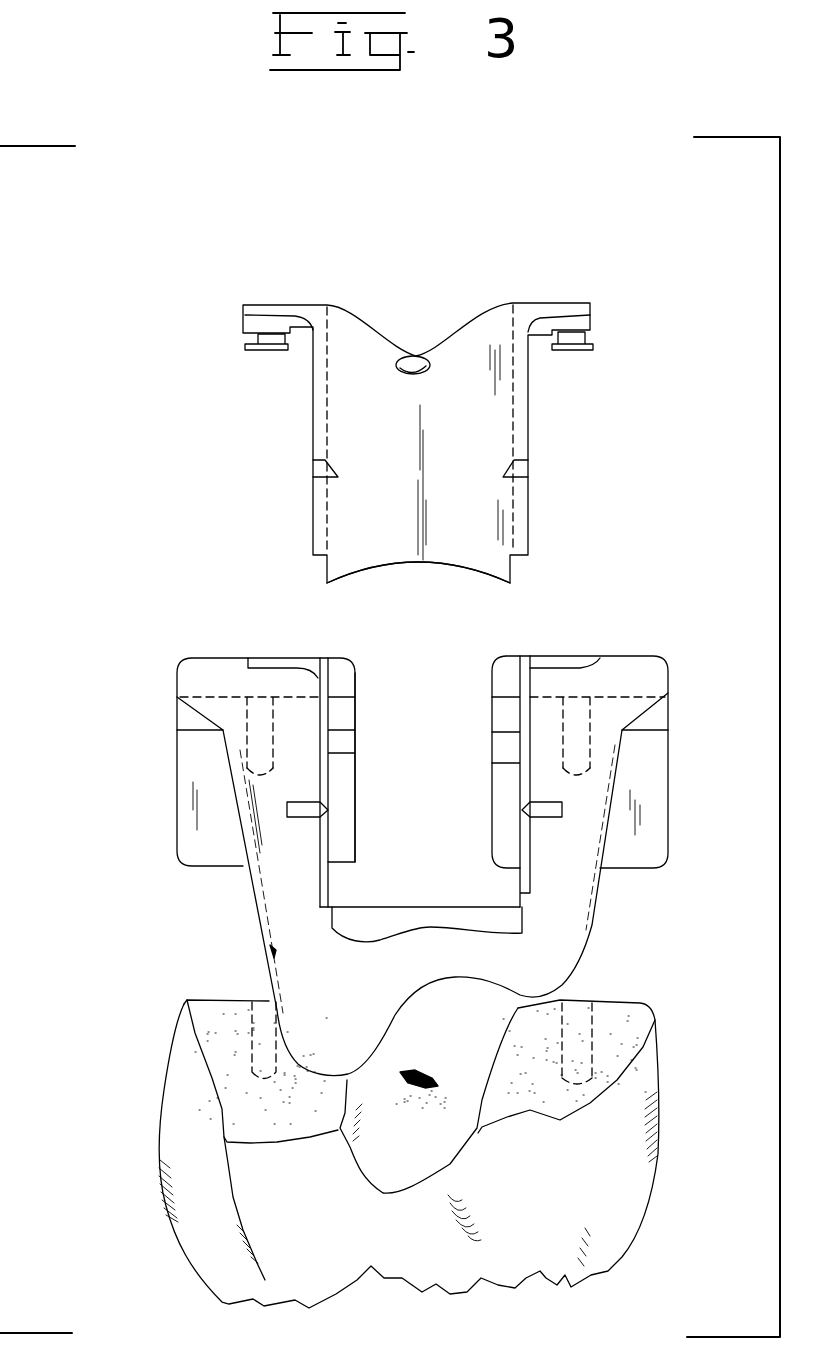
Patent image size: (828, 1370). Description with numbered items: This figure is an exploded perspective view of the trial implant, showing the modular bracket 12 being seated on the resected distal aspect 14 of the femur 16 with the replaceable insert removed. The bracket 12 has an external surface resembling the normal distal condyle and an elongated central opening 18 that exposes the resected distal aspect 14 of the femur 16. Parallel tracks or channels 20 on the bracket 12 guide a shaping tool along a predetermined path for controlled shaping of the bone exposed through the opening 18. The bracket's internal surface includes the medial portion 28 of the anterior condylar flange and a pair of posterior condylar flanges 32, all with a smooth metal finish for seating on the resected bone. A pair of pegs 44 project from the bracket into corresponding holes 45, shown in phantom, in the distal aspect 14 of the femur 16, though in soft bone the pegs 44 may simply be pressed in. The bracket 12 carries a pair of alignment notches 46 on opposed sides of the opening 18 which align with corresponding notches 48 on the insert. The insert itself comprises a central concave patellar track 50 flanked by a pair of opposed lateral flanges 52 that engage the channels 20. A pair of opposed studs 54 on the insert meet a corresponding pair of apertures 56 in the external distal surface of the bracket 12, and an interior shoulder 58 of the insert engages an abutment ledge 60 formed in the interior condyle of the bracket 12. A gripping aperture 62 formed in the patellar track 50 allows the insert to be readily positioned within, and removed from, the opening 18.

The modular bracket 12 is at (377, 803).
The distal aspect 14 is at (438, 1126).
The femur bone 16 is at (617, 1270).
The elongated central opening 18 is at (390, 862).
The parallel tracks or channels 20 is at (530, 760).
The medial portion of anterior condylar flange 28 is at (364, 668).
The posterior condylar flanges 32 is at (215, 848).
The pegs 44 is at (593, 738).
The pin hole 45 is at (246, 1020).
The alignment notches 46 is at (307, 802).
The notches 48 is at (315, 465).
The central concave patellar track 50 is at (392, 410).
The lateral flanges 52 is at (528, 412).
The studs 54 is at (250, 338).
The apertures 56 is at (275, 657).
The interior shoulder 58 is at (408, 568).
The abutment ledge 60 is at (472, 915).
The gripping aperture 62 is at (412, 356).